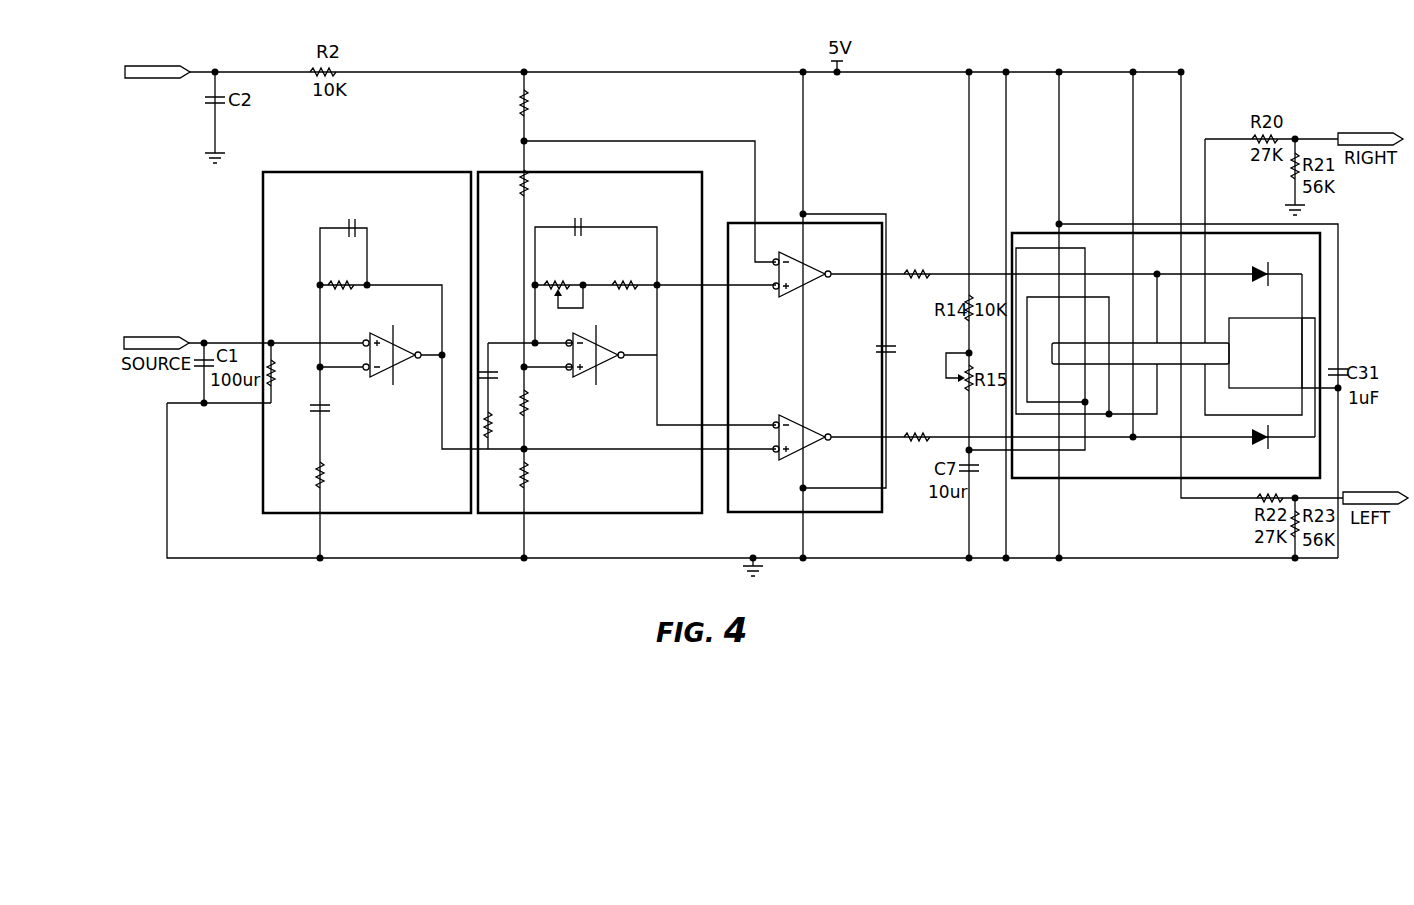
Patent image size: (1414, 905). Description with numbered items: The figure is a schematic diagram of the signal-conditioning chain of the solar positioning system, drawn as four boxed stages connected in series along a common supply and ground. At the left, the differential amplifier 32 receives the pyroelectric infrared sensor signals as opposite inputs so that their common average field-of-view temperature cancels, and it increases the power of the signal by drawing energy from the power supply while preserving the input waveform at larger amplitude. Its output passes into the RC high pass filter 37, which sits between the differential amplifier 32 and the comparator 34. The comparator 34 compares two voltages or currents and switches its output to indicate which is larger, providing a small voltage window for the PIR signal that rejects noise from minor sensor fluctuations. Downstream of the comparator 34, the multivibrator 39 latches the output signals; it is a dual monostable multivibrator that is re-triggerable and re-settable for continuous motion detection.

The differential amplifier 32 is at (399, 513).
The RC high pass filter 37 is at (615, 513).
The comparator 34 is at (842, 513).
The multivibrator 39 is at (1105, 478).